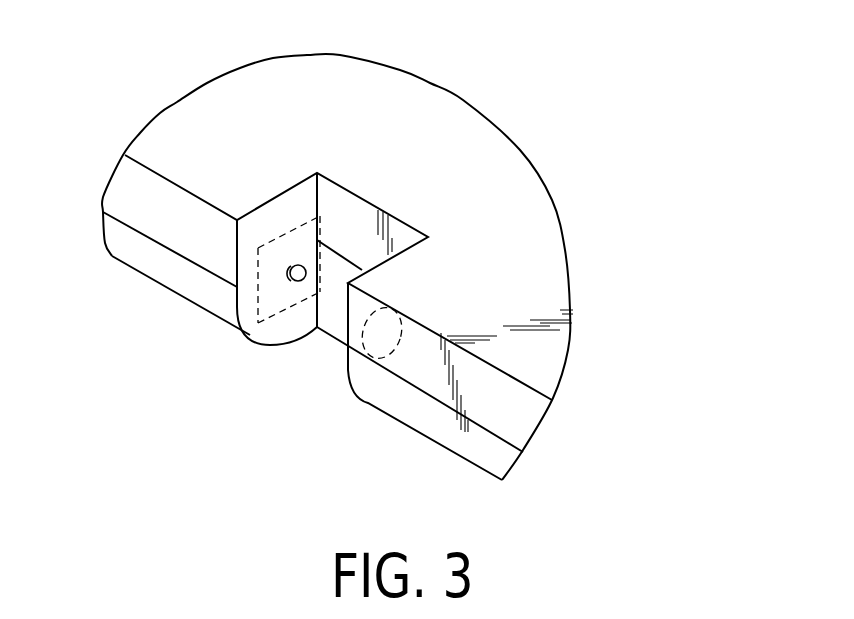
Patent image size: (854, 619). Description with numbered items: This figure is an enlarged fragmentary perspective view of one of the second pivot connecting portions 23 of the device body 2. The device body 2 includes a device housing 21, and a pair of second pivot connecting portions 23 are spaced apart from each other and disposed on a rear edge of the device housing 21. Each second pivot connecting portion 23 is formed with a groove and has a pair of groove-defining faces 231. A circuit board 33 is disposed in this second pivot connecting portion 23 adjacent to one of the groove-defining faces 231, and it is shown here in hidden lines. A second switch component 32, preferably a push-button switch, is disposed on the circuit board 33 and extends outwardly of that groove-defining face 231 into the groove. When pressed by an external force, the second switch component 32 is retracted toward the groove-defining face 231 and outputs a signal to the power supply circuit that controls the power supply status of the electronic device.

The device body 2 is at (177, 102).
The device housing 21 is at (422, 413).
The second pivot connecting portion 23 is at (306, 360).
The groove-defining face 231 is at (253, 303).
The second switch component 32 is at (292, 278).
The circuit board 33 is at (258, 248).